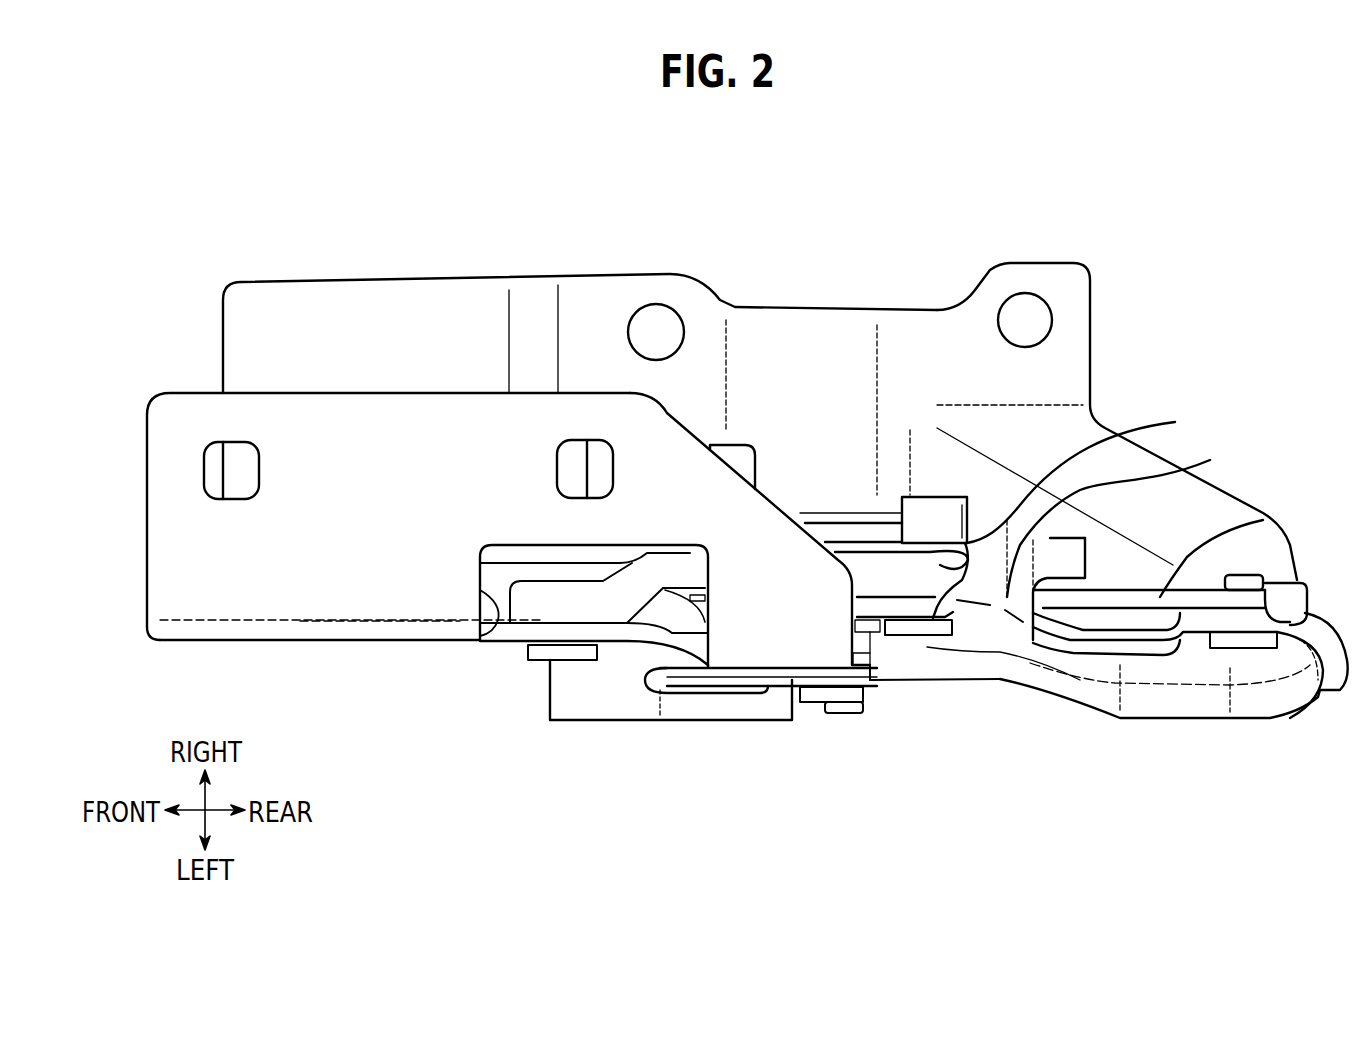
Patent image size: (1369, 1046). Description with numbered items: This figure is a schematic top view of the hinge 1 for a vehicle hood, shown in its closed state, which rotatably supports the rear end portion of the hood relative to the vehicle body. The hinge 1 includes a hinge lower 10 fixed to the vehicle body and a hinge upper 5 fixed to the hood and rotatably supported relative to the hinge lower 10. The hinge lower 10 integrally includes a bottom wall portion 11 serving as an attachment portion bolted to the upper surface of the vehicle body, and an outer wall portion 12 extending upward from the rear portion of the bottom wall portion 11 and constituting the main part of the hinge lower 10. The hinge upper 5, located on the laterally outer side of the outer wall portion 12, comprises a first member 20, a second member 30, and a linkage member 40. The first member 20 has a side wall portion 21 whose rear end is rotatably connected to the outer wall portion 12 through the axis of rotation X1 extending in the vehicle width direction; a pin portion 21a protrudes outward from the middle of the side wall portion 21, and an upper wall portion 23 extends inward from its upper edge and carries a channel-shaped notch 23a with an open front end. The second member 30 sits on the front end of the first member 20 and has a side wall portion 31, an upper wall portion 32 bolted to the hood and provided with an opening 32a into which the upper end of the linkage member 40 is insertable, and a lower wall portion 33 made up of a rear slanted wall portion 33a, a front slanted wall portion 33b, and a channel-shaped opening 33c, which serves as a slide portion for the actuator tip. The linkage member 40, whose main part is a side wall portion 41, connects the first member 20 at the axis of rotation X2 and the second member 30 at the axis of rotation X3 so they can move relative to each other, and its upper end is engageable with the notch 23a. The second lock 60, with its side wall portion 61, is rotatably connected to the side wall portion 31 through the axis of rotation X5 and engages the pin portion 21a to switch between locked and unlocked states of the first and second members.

The hinge 1 is at (928, 202).
The hinge upper 5 is at (122, 612).
The hinge lower 10 is at (605, 244).
The bottom wall portion 11 is at (410, 290).
The outer wall portion 12 is at (1263, 520).
The first member 20 is at (1173, 726).
The side wall portion 21 is at (1002, 617).
The pin portion 21a is at (850, 702).
The upper wall portion 23 is at (1105, 549).
The notch 23a is at (1101, 523).
The second member 30 is at (168, 380).
The side wall portion 31 is at (355, 642).
The upper wall portion 32 is at (147, 558).
The opening 32a is at (497, 613).
The lower wall portion 33 is at (765, 788).
The rear slanted wall portion 33a is at (715, 700).
The front slanted wall portion 33b is at (585, 700).
The channel-shaped opening 33c is at (660, 700).
The linkage member 40 is at (573, 574).
The side wall portion 41 is at (887, 568).
The second lock 60 is at (928, 759).
The side wall portion 61 is at (890, 680).
The axis of rotation X1 is at (1250, 643).
The axis of rotation X2 is at (917, 627).
The axis of rotation X3 is at (540, 687).
The axis of rotation X5 is at (817, 695).